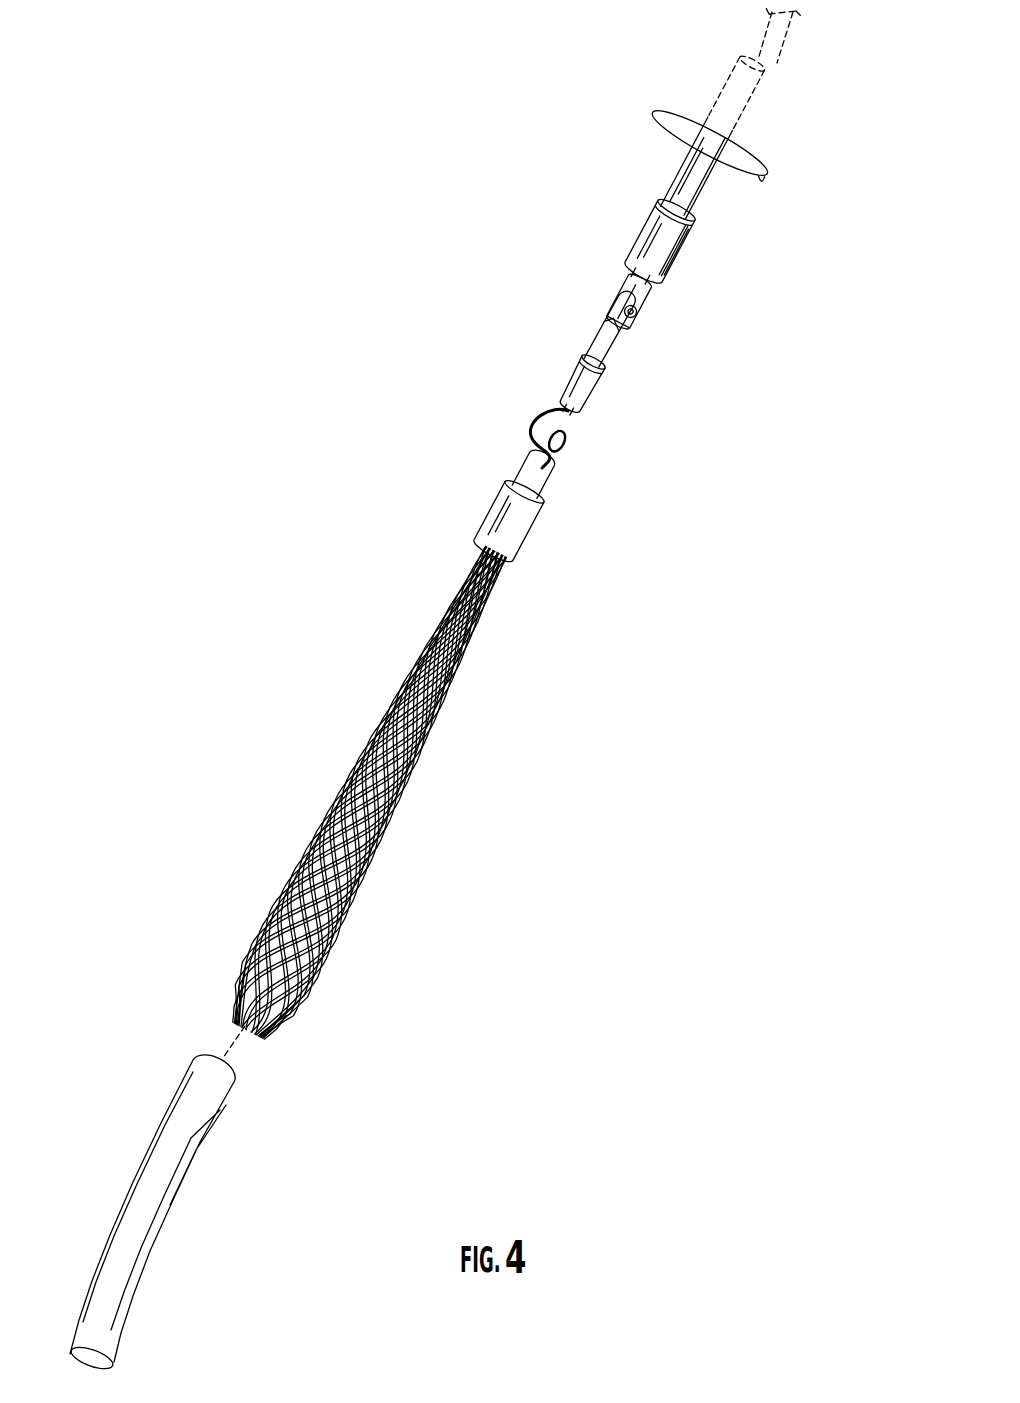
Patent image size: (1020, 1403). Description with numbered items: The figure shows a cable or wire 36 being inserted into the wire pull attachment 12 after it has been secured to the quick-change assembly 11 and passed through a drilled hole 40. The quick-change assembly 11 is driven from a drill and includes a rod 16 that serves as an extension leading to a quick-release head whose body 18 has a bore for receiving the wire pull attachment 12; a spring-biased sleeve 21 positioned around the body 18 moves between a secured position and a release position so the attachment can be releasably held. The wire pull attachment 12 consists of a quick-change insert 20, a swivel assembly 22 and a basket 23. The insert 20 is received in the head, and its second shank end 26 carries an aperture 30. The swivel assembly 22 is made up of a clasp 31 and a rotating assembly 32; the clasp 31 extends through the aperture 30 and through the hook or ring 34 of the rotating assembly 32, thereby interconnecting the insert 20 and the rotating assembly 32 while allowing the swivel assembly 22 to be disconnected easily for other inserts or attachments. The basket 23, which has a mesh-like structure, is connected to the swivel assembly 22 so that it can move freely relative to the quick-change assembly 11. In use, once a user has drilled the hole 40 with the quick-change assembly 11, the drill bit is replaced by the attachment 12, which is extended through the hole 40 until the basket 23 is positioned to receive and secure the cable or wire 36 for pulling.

The quick-change assembly 11 is at (691, 146).
The wire pull attachment 12 is at (375, 787).
The rod 16 is at (765, 36).
The body 18 is at (739, 64).
The quick-change insert 20 is at (643, 321).
The spring-biased sleeve 21 is at (651, 231).
The swivel assembly 22 is at (581, 384).
The basket 23 is at (297, 686).
The second shank end 26 is at (622, 297).
The aperture 30 is at (641, 314).
The clasp 31 is at (622, 346).
The rotating assembly 32 is at (529, 473).
The hook or ring 34 is at (566, 439).
The cable or wire 36 is at (162, 1113).
The hole 40 is at (760, 177).